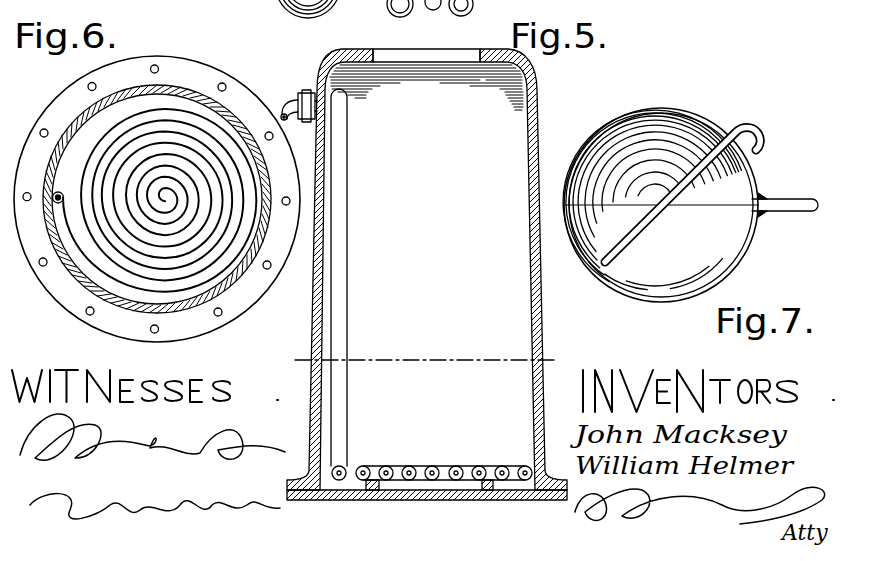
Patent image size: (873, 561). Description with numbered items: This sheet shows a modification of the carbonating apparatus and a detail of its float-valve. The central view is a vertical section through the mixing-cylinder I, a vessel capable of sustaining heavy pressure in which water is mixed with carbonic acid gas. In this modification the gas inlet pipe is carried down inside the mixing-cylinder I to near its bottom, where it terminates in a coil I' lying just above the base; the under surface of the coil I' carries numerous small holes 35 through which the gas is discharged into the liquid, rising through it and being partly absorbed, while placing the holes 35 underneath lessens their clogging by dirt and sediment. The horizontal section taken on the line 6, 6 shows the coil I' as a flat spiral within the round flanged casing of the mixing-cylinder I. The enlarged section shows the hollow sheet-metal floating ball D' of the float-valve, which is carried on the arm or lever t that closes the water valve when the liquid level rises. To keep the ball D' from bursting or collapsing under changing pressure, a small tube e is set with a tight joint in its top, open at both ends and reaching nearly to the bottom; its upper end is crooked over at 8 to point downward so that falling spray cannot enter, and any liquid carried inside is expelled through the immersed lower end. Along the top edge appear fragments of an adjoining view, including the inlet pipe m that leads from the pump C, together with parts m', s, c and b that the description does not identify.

In FIG. 6, the mixing-cylinder I is at (157, 199).
In FIG. 5, the mixing-cylinder I is at (424, 274).
In FIG. 6, the coil I' is at (137, 223).
In FIG. 5, the coil I' is at (431, 284).
In FIG. 5, the small holes 35 is at (462, 484).
In FIG. 5, the section line 6 is at (425, 361).
In FIG. 7, the bent-over upper end of tube 8 is at (748, 126).
In FIG. 7, the arm or lever t is at (789, 208).
In FIG. 7, the small tube e is at (650, 223).
In FIG. 7, the floating ball D' is at (680, 205).
In FIG. 5, the inlet pipe m is at (284, 9).
In FIG. 5, the coil end (adjoining figure) m' is at (266, 25).
In FIG. 5, the part s (adjoining figure) s is at (333, 8).
In FIG. 5, the part c (adjoining figure) c is at (361, 11).
In FIG. 5, the part b (adjoining figure) b is at (485, 15).
In FIG. 5, the pump C is at (448, 16).